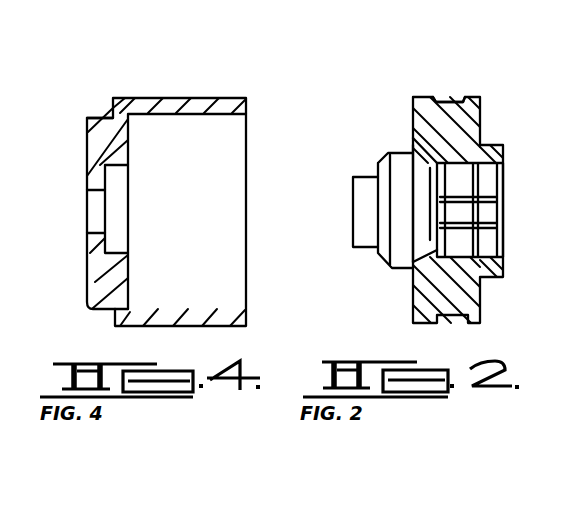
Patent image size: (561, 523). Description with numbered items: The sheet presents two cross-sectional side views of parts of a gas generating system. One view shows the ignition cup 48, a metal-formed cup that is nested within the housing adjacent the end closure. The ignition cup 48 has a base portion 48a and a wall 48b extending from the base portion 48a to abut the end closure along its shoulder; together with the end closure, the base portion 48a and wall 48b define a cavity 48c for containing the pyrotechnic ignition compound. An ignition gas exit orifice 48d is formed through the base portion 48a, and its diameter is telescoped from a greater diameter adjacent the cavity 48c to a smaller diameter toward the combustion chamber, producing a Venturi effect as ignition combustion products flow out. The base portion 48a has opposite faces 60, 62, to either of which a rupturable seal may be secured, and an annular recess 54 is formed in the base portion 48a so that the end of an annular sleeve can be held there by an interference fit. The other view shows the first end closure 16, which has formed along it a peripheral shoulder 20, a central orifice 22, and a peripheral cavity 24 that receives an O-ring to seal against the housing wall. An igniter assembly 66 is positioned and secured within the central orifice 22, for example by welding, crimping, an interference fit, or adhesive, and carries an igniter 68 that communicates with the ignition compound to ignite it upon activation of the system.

In FIG. 4, the ignition cup 48 is at (143, 70).
In FIG. 4, the base portion 48a is at (97, 140).
In FIG. 4, the wall 48b is at (207, 103).
In FIG. 4, the cavity 48c is at (193, 252).
In FIG. 4, the ignition gas exit orifice 48d is at (87, 205).
In FIG. 4, the face 60 is at (128, 147).
In FIG. 4, the face 62 is at (86, 156).
In FIG. 4, the annular recess 54 is at (115, 314).
In FIG. 2, the first end closure 16 is at (477, 99).
In FIG. 2, the peripheral shoulder 20 is at (413, 297).
In FIG. 2, the central orifice 22 is at (398, 168).
In FIG. 2, the peripheral cavity 24 is at (452, 99).
In FIG. 2, the igniter assembly 66 is at (410, 150).
In FIG. 2, the igniter 68 is at (353, 182).